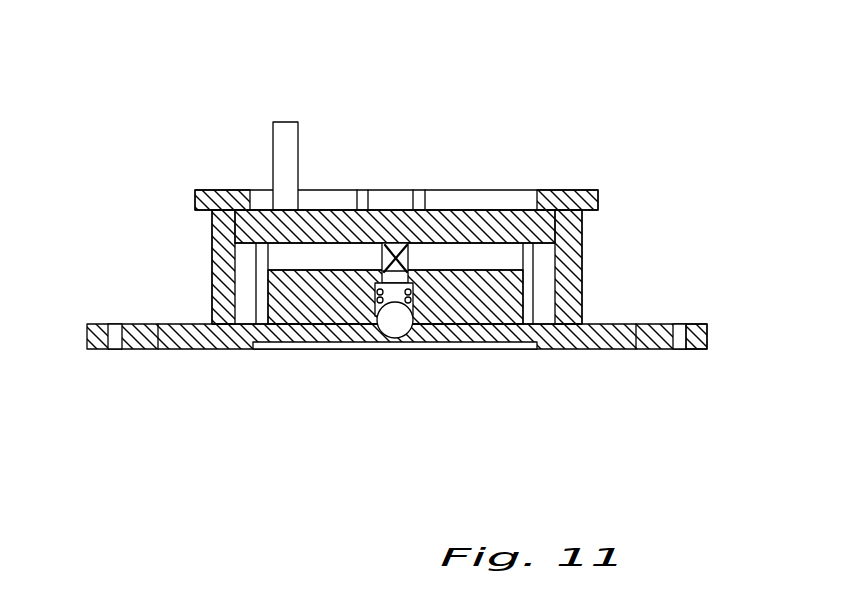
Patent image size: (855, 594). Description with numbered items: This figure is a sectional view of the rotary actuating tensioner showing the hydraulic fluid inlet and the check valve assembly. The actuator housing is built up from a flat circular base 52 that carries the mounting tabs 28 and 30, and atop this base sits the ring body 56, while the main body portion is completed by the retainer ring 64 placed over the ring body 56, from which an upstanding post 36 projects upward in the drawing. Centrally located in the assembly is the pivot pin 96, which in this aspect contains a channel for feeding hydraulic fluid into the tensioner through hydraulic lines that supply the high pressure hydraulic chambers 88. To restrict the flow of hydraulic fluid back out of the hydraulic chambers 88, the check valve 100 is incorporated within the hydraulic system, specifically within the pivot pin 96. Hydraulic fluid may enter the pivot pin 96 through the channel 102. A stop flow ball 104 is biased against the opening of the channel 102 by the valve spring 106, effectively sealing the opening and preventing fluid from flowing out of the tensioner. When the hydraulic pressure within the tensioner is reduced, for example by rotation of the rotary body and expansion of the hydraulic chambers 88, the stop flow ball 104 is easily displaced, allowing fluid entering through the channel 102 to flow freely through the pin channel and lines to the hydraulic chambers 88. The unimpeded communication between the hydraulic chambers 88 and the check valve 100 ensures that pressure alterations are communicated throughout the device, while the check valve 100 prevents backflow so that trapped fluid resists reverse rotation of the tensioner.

The mounting tab 28 is at (707, 332).
The mounting tab 30 is at (87, 335).
The post 36 is at (283, 130).
The flat circular base 52 is at (243, 349).
The ring body 56 is at (212, 240).
The retainer ring 64 is at (195, 198).
The hydraulic chambers 88 is at (247, 277).
The pivot pin 96 is at (398, 267).
The check valve 100 is at (353, 402).
The channel 102 is at (408, 304).
The stop flow ball 104 is at (395, 327).
The valve spring 106 is at (374, 287).